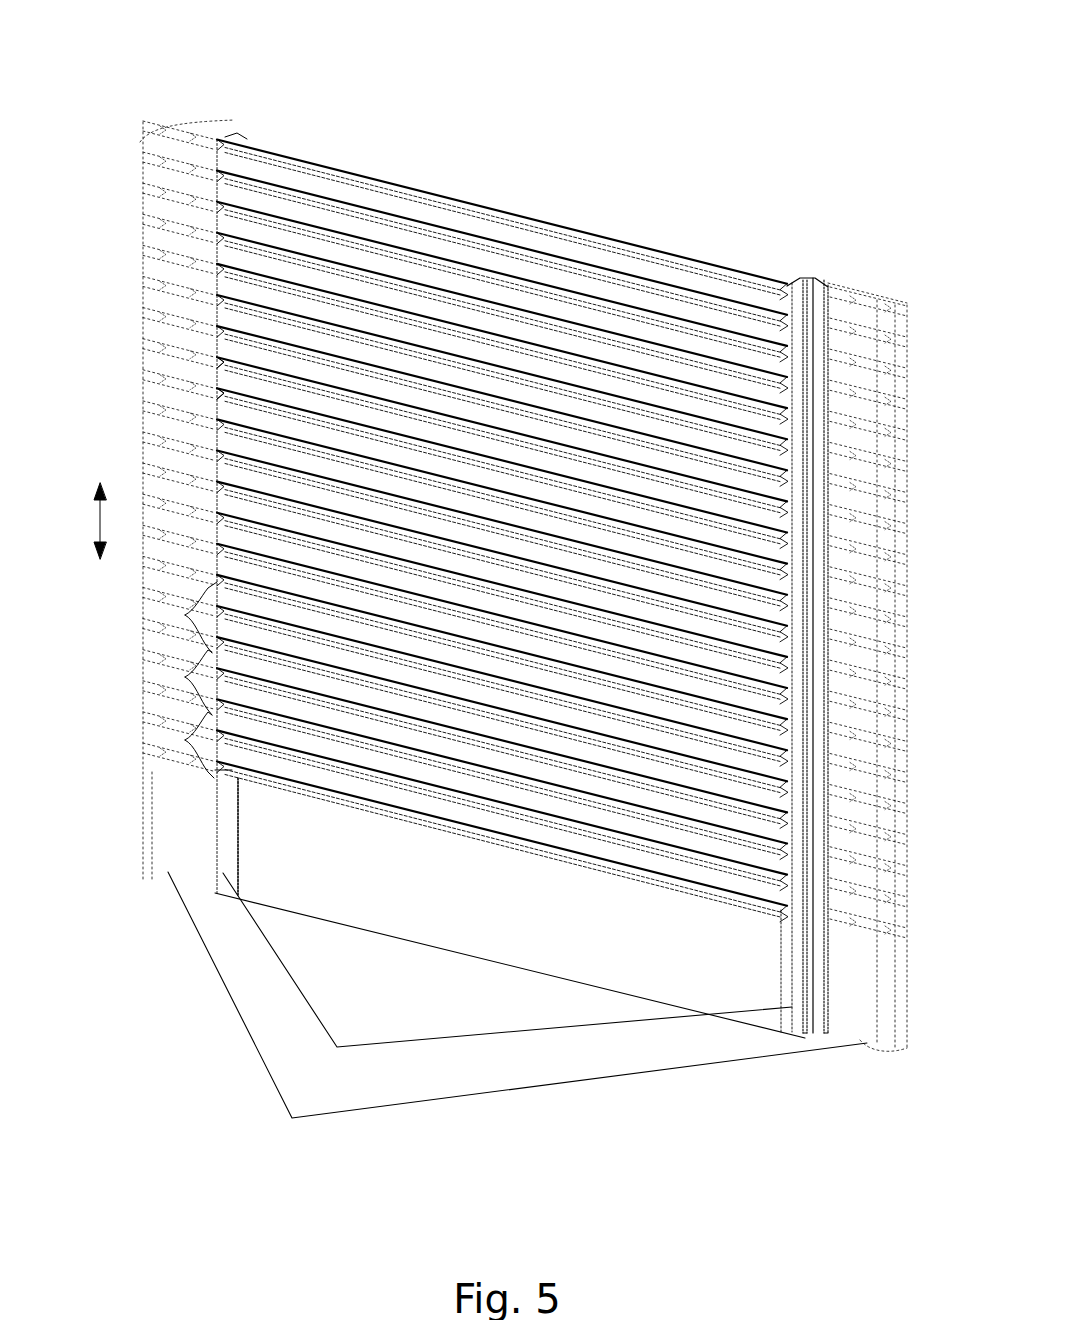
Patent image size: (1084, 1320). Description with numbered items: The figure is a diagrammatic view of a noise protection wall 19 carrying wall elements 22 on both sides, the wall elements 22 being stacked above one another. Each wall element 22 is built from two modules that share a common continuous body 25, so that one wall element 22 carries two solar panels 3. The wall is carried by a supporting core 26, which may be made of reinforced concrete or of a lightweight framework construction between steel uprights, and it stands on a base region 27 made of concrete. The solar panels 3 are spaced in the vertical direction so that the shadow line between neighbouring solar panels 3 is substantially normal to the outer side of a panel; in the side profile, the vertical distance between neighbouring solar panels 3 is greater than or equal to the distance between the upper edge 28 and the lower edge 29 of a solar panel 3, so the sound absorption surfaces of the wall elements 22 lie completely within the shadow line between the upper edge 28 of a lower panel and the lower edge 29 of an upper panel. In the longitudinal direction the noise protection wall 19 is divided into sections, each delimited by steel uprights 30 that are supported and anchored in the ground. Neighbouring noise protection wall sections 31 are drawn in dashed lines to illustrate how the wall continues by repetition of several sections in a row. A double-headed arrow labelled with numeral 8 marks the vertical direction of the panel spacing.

The noise protection wall 19 is at (551, 128).
The solar panel 3 is at (212, 258).
The common continuous body 25 is at (705, 278).
The supporting core 26 is at (790, 273).
The upper edge 28 is at (217, 367).
The lower edge 29 is at (212, 388).
The direction of movement 8 is at (94, 521).
The wall element 22 is at (185, 740).
The base region 27 is at (478, 915).
The steel upright 30 is at (507, 977).
The noise protection wall section 31 is at (517, 1011).